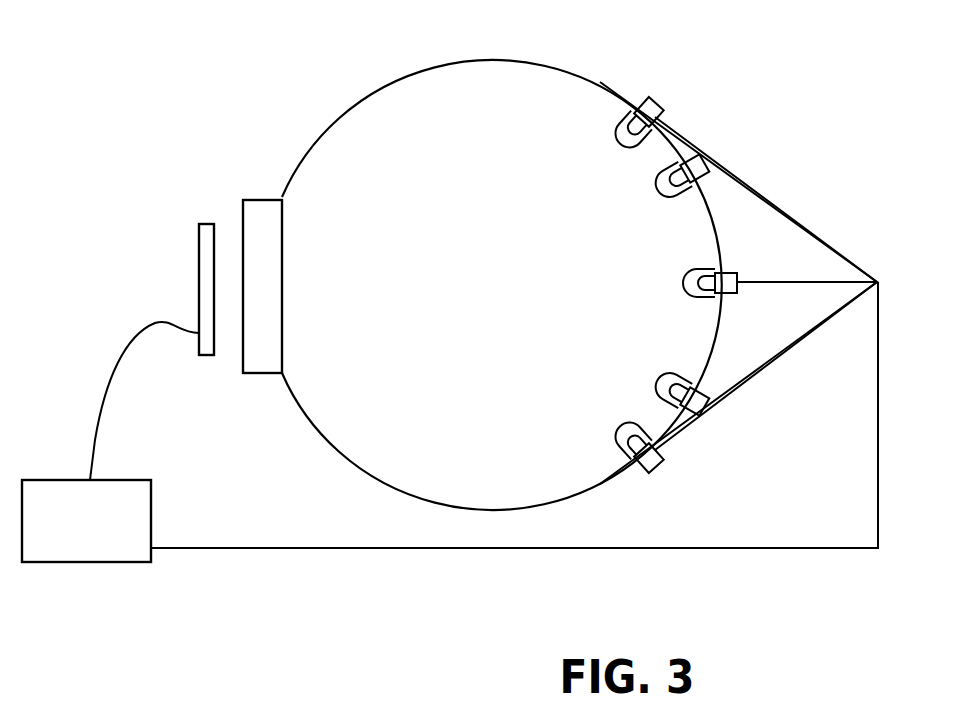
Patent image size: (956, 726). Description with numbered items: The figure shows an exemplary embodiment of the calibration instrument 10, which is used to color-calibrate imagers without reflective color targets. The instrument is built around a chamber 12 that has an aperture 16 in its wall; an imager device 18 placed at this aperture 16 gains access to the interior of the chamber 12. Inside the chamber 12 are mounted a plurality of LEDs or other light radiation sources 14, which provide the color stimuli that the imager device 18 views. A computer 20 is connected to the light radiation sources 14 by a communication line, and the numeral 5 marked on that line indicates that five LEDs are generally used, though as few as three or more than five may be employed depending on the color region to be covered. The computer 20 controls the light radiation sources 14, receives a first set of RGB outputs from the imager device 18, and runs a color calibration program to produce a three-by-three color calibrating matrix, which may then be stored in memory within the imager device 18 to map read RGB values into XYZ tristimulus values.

The calibration instrument 10 is at (176, 43).
The chamber 12 is at (374, 106).
The light radiation sources 14 is at (664, 176).
The aperture 16 is at (247, 374).
The imager device 18 is at (198, 233).
The computer 20 is at (130, 480).
The communication line marking for five LEDs 5 is at (873, 413).